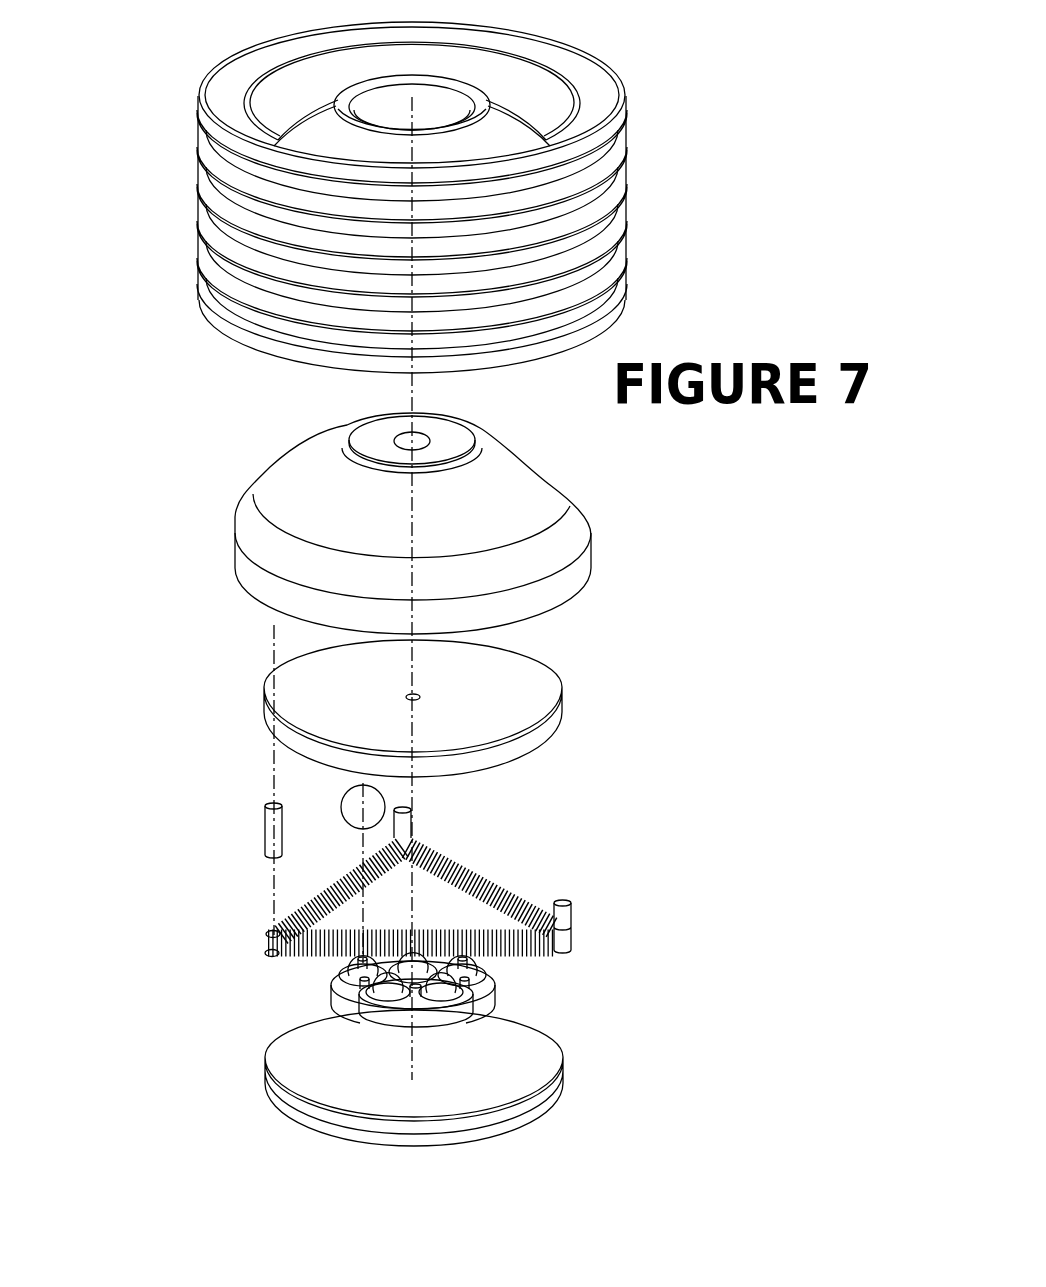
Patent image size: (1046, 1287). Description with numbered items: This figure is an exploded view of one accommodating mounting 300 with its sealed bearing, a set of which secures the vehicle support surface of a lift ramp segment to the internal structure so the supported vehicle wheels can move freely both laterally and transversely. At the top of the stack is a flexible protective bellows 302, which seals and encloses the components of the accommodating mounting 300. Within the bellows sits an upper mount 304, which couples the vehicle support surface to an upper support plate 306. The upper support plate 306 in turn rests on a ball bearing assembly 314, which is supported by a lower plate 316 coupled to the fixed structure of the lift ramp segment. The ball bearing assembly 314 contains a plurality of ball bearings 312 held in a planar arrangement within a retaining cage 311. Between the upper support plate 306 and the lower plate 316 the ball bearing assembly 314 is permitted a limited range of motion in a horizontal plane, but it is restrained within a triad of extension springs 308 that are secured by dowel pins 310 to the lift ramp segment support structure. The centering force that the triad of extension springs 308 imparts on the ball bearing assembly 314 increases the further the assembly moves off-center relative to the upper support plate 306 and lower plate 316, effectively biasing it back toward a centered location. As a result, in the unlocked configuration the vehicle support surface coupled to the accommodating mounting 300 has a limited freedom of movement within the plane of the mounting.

The accommodating mounting 300 is at (152, 1192).
The flexible protective bellows 302 is at (625, 192).
The upper mount 304 is at (592, 533).
The upper support plate 306 is at (507, 700).
The extension springs 308 is at (483, 877).
The dowel pins 310 is at (258, 815).
The retaining cage 311 is at (326, 990).
The ball bearings 312 is at (372, 795).
The ball bearing assembly 314 is at (507, 988).
The lower plate 316 is at (507, 1085).